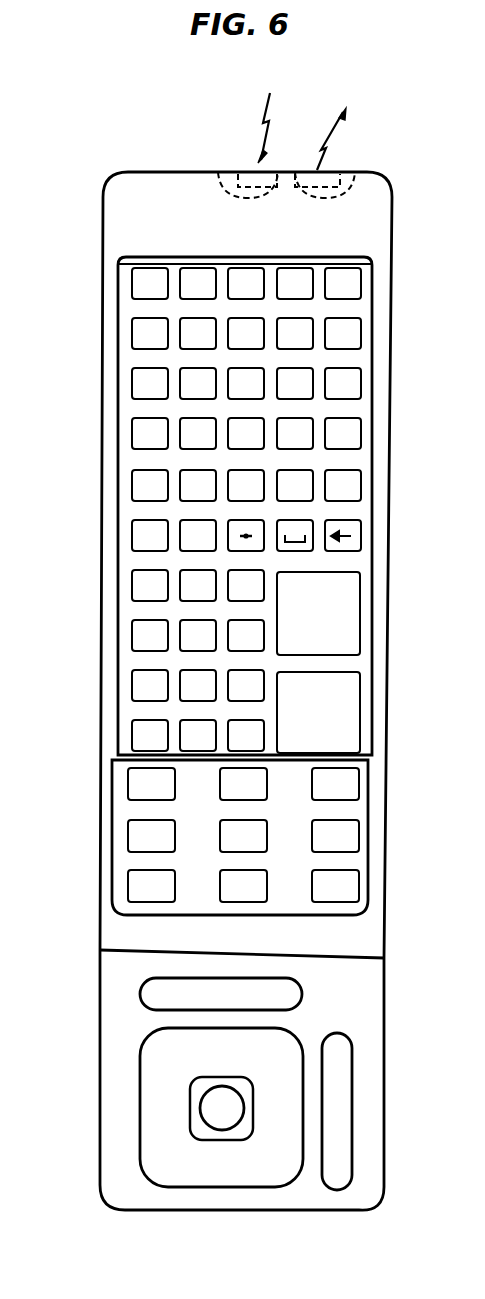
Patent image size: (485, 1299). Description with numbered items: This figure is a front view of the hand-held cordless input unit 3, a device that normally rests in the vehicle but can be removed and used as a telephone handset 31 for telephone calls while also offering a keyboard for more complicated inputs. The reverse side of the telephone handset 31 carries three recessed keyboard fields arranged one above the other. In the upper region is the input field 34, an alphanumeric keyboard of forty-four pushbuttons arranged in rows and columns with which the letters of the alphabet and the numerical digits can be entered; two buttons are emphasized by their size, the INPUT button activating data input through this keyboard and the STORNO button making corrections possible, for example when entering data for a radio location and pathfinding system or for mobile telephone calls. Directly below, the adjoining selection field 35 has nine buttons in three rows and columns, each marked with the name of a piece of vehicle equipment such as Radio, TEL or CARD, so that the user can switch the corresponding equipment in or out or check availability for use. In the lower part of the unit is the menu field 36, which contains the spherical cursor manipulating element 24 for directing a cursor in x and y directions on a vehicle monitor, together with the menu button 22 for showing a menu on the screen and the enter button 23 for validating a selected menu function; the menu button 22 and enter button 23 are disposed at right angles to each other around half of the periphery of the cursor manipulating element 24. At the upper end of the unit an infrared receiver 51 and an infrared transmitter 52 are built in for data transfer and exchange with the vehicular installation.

The mobile communication device 3 is at (412, 583).
The telephone handset 31 is at (123, 213).
The input field 34 is at (125, 443).
The selection field 35 is at (122, 787).
The menu field 36 is at (118, 1025).
The menu button 22 is at (287, 992).
The enter button 23 is at (340, 1172).
The cursor manipulating element 24 is at (208, 1113).
The infrared receiver 51 is at (218, 174).
The infrared transmitter 52 is at (363, 178).